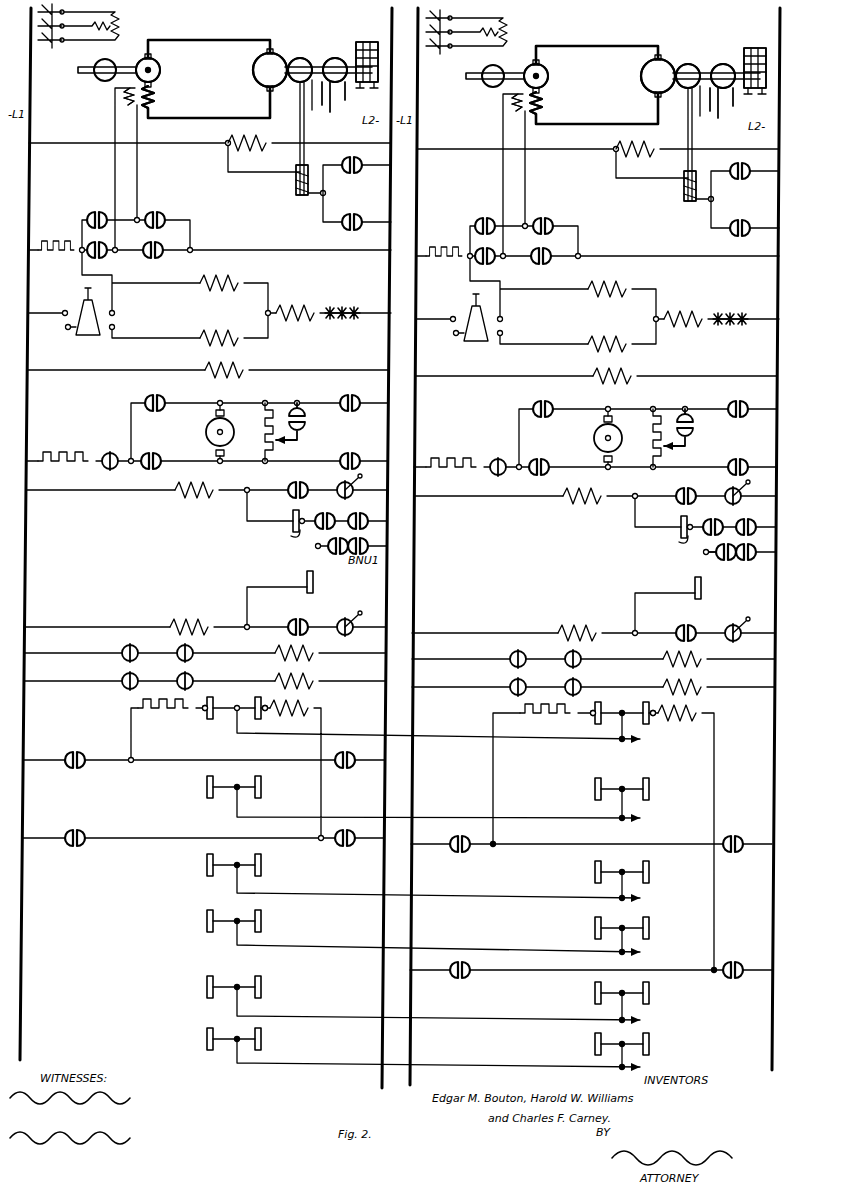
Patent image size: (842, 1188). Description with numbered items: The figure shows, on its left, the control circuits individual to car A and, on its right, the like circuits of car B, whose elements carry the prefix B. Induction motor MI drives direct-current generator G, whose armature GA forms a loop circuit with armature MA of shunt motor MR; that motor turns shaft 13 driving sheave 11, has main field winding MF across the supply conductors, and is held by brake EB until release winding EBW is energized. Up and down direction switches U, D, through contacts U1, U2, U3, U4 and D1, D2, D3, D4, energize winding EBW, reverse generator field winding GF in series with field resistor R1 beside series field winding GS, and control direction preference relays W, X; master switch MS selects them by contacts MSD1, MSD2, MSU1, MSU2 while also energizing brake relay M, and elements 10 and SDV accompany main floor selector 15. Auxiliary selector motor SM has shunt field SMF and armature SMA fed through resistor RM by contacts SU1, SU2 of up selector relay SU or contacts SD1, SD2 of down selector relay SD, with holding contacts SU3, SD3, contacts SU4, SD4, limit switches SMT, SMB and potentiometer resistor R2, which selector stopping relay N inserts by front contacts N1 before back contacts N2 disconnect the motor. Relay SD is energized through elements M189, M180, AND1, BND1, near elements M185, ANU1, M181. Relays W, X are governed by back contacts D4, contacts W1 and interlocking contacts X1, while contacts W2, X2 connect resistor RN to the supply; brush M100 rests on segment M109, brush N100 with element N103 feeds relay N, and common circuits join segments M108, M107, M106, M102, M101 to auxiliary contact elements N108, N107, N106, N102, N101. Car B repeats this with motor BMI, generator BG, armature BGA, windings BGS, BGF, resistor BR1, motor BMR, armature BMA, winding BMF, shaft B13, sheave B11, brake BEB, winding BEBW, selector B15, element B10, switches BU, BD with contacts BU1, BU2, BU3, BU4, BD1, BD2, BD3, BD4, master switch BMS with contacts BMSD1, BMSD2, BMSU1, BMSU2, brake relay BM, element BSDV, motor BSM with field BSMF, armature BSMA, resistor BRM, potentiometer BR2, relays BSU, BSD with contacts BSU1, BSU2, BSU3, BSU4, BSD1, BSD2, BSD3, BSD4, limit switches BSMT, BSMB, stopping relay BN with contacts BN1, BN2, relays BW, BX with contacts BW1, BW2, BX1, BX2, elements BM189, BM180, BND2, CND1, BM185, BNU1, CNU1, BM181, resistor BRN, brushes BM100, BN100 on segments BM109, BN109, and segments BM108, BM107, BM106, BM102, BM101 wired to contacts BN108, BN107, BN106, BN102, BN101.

The induction motor MI is at (85, 26).
The direct-current generator G is at (228, 145).
The generator armature GA is at (160, 67).
The series field winding GS is at (159, 97).
The separately excited main field winding GF is at (112, 98).
The motor MR is at (281, 54).
The motor armature MA is at (300, 62).
The brake EB is at (332, 61).
The main floor selector 15 is at (366, 38).
The brush 10 is at (345, 100).
The sheave 11 is at (341, 102).
The shaft 13 is at (315, 103).
The brake release winding EBW is at (296, 180).
The main field winding MF is at (247, 135).
The up contact U1 is at (355, 174).
The down direction switch contacts D1 is at (354, 214).
The field resistor R1 is at (56, 238).
The down direction switch contacts D3 is at (100, 257).
The up contact U3 is at (143, 244).
The up contact U2 is at (91, 213).
The down direction switch contacts D2 is at (155, 213).
The master switch MS is at (69, 309).
The master switch down contact MSD2 is at (51, 314).
The master switch contacts MSD1 is at (52, 328).
The master switch up contact MSU2 is at (130, 312).
The master switch up contact MSU1 is at (130, 327).
The up direction switch U is at (219, 276).
The down direction switch D is at (219, 333).
The brake relay M is at (295, 305).
The slow down device SDV is at (342, 304).
The shunt field winding SMF is at (224, 376).
The selector up contact SU1 is at (152, 395).
The down selector relay contacts SD1 is at (345, 395).
The auxiliary motor SM is at (212, 430).
The auxiliary motor armature SMA is at (206, 433).
The potentiometer resistor R2 is at (280, 432).
The front contacts of selector stopping relay N1 is at (300, 423).
The resistor RM is at (63, 449).
The back contacts of selector stopping relay N2 is at (109, 454).
The down selector relay contacts SD2 is at (149, 453).
The selector up contact SU2 is at (345, 453).
The down selector relay SD is at (194, 483).
The down selector relay holding contacts SD3 is at (296, 483).
The limit switch SMB is at (341, 485).
The down selector relay circuit element M189 is at (277, 517).
The contacts AND1 is at (327, 514).
The contacts BND1 is at (363, 514).
The down selector relay circuit element M180 is at (278, 537).
The contact M185 is at (316, 548).
The contact ANU1 is at (341, 553).
The contact M181 is at (313, 583).
The up selector relay SU is at (189, 619).
The selector up contact SU3 is at (294, 619).
The limit switch SMT is at (344, 617).
The down direction switch back contacts D4 is at (115, 649).
The back contacts of down direction preference relay X1 is at (194, 649).
The up direction preference relay W is at (301, 648).
The up contact U4 is at (115, 677).
The contacts of up direction preference relay W1 is at (196, 677).
The down direction preference relay X is at (299, 676).
The resistor RN is at (163, 714).
The main floor selector contact segment M109 is at (225, 701).
The movable brush of main floor selector M100 is at (197, 719).
The contact N103 is at (258, 714).
The auxiliary floor selector brush N100 is at (287, 718).
The selector stopping relay N is at (298, 703).
The contacts of up direction preference relay W2 is at (72, 752).
The contacts of down direction preference relay X2 is at (344, 752).
The contact M108 is at (189, 787).
The auxiliary floor selector contact element N108 is at (275, 785).
The down selector relay contacts SD4 is at (71, 831).
The selector up contact SU4 is at (341, 829).
The contact M107 is at (185, 865).
The auxiliary floor selector contact element N107 is at (275, 863).
The contact M106 is at (180, 921).
The contact N106 is at (275, 920).
The contact M102 is at (177, 987).
The contact N102 is at (275, 987).
The contact M101 is at (175, 1039).
The contact N101 is at (275, 1039).
The induction motor BMI is at (477, 32).
The direct-current generator BG is at (616, 151).
The generator armature BGA is at (553, 76).
The series field winding BGS is at (550, 103).
The separately excited main field winding BGF is at (484, 103).
The motor BMR is at (658, 58).
The motor armature BMA is at (686, 65).
The brake BEB is at (720, 68).
The main floor selector B15 is at (747, 56).
The brush B10 is at (747, 100).
The sheave B11 is at (732, 108).
The shaft B13 is at (699, 109).
The brake release winding BEBW is at (663, 186).
The main field winding BMF is at (635, 141).
The up contact BU1 is at (743, 180).
The down direction switch contacts BD1 is at (744, 219).
The field resistor BR1 is at (440, 244).
The down direction switch contacts BD3 is at (491, 263).
The up contact BU3 is at (527, 250).
The up contact BU2 is at (474, 218).
The down direction switch contacts BD2 is at (545, 218).
The master switch BMS is at (492, 317).
The master switch down contact BMSD2 is at (438, 325).
The master switch contacts BMSD1 is at (438, 343).
The master switch up contact BMSU2 is at (522, 316).
The master switch up contact BMSU1 is at (519, 344).
The up direction switch BU is at (607, 281).
The down direction switch BD is at (607, 338).
The brake relay BM is at (683, 310).
The slow down device BSDV is at (727, 309).
The shunt field winding BSMF is at (611, 382).
The selector up contact BSU1 is at (534, 401).
The down selector relay contacts BSD1 is at (727, 401).
The auxiliary motor BSM is at (581, 438).
The auxiliary motor armature BSMA is at (589, 439).
The potentiometer resistor BR2 is at (655, 438).
The front contacts of selector stopping relay BN1 is at (692, 429).
The resistor BRM is at (447, 455).
The back contacts of selector stopping relay BN2 is at (491, 460).
The down selector relay contacts BSD2 is at (532, 459).
The selector up contact BSU2 is at (727, 459).
The down selector relay BSD is at (580, 489).
The down selector relay holding contacts BSD3 is at (678, 489).
The limit switch BSMB is at (725, 492).
The down selector relay circuit element BM189 is at (661, 523).
The contact BND2 is at (713, 520).
The contact CND1 is at (751, 520).
The down selector relay circuit element BM180 is at (660, 543).
The contact BM185 is at (697, 552).
The contact BNU1 is at (699, 563).
The contact CNU1 is at (747, 559).
The contact BM181 is at (719, 588).
The up selector relay BSU is at (576, 625).
The selector up contact BSU3 is at (674, 625).
The limit switch BSMT is at (728, 623).
The down direction switch back contacts BD4 is at (497, 655).
The back contacts of down direction preference relay BX1 is at (586, 655).
The up direction preference relay BW is at (691, 654).
The up contact BU4 is at (497, 683).
The contacts of up direction preference relay BW1 is at (587, 683).
The down direction preference relay BX is at (689, 682).
The resistor BRN is at (535, 719).
The main floor selector contact segment BM109 is at (585, 707).
The movable brush of main floor selector BM100 is at (572, 723).
The auxiliary floor selector contact element BN109 is at (646, 706).
The auxiliary floor selector brush BN100 is at (668, 724).
The selector stopping relay BN is at (690, 707).
The contact BM108 is at (567, 789).
The auxiliary floor selector contact element BN108 is at (667, 788).
The contacts of up direction preference relay BW2 is at (452, 837).
The contacts of down direction preference relay BX2 is at (728, 837).
The contact BM107 is at (619, 866).
The auxiliary floor selector contact element BN107 is at (667, 872).
The contact BM106 is at (566, 928).
The contact BN106 is at (667, 928).
The down selector relay contacts BSD4 is at (449, 979).
The selector up contact BSU4 is at (723, 964).
The contact BM102 is at (567, 993).
The contact BN102 is at (667, 993).
The contact BM101 is at (565, 1044).
The contact BN101 is at (667, 1044).